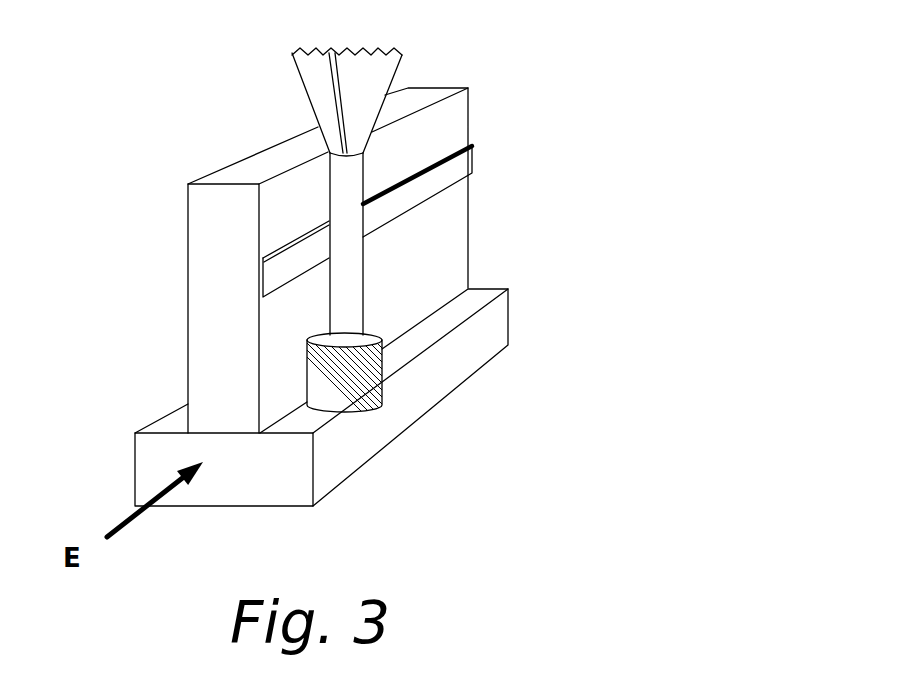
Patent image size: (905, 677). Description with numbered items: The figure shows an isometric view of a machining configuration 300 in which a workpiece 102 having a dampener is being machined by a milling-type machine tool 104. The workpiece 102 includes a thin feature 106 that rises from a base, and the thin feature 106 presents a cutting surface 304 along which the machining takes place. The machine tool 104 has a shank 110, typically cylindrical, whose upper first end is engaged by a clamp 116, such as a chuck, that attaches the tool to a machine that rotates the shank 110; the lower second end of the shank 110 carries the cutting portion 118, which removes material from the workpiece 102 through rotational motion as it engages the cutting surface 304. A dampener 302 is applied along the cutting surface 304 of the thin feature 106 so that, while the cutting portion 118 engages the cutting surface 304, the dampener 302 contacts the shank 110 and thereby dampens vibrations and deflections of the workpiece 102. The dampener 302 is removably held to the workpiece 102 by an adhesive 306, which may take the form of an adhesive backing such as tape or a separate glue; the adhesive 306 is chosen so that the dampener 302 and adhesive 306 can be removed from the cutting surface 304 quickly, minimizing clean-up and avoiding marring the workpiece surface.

The machining configuration 300 is at (130, 78).
The workpiece 102 is at (154, 206).
The thin feature 106 is at (207, 271).
The machine tool 104 is at (396, 367).
The cutting surface 304 is at (427, 285).
The dampener 302 is at (453, 172).
The adhesive 306 is at (457, 140).
The shank 110 is at (363, 263).
The clamp 116 is at (400, 50).
The cutting portion 118 is at (343, 410).